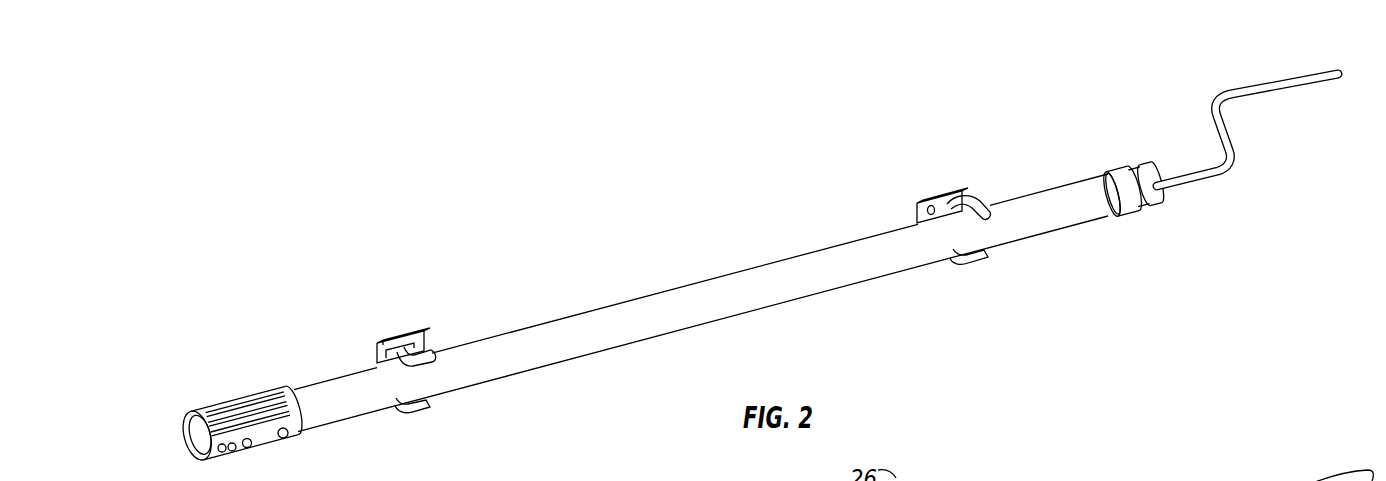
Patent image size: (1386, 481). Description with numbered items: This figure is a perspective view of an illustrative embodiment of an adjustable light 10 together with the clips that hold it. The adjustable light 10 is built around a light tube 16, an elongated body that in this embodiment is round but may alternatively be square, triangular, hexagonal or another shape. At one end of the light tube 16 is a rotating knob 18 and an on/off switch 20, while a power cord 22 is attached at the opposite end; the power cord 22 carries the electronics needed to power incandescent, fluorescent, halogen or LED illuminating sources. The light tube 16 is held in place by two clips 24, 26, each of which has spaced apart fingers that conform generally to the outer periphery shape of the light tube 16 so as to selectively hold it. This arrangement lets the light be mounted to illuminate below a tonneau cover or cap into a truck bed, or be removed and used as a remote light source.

The adjustable light 10 is at (939, 124).
The light tube 16 is at (712, 279).
The rotating knob 18 is at (240, 395).
The on/off switch 20 is at (184, 439).
The power cord 22 is at (1187, 167).
The clip 24 is at (402, 334).
The clip 26 is at (942, 189).